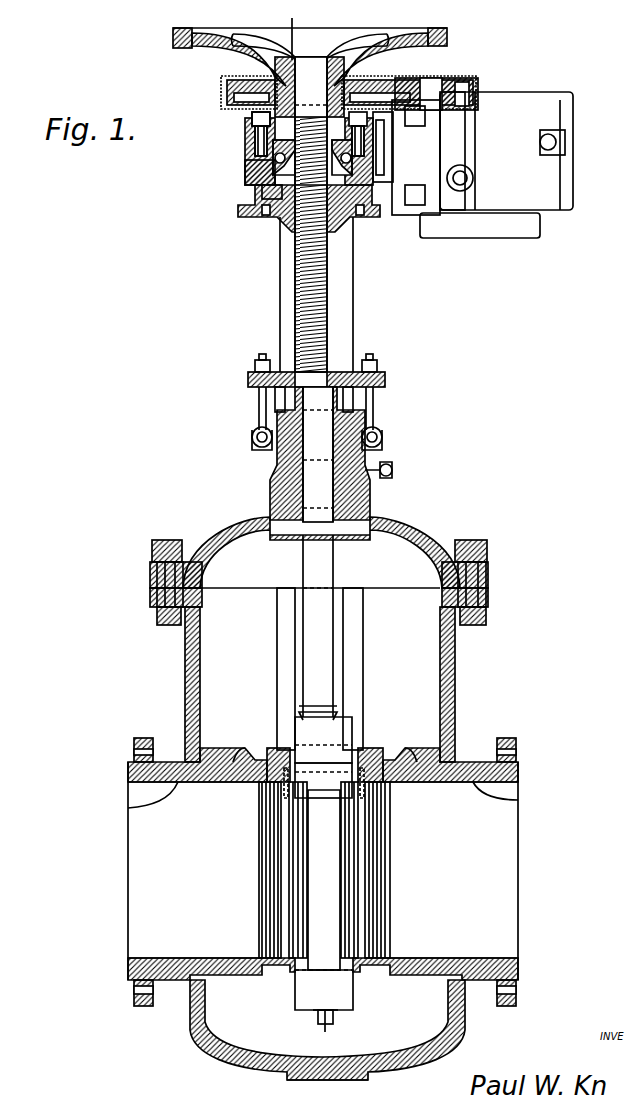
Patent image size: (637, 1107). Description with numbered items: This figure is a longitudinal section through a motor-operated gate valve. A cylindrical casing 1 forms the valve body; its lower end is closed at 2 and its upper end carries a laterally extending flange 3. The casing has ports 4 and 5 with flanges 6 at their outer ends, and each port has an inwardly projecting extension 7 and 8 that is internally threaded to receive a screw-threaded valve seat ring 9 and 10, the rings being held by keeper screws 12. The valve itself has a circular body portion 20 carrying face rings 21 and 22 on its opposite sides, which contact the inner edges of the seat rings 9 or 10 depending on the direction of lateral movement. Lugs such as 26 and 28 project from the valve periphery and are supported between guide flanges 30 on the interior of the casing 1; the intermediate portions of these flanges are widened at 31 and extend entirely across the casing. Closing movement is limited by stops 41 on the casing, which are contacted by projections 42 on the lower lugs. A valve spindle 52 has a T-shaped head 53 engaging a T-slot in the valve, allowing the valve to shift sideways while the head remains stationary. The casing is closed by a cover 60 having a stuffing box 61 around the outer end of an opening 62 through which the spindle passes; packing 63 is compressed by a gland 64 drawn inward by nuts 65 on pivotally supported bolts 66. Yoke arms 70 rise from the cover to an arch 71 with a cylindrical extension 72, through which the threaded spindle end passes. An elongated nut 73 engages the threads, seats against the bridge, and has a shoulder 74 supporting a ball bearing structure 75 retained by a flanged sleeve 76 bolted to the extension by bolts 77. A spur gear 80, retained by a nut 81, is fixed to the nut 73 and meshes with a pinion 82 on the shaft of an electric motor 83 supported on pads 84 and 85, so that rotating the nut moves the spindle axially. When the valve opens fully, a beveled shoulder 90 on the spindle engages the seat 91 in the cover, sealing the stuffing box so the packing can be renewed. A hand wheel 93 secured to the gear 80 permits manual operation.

The cylindrical casing 1 is at (456, 690).
The closed lower end 2 is at (254, 1070).
The laterally extending flange 3 is at (486, 600).
The port 4 is at (490, 792).
The port 5 is at (170, 792).
The flanges 6 is at (142, 738).
The inwardly projecting extension 7 is at (402, 768).
The inwardly projecting extension 8 is at (238, 758).
The valve seat ring 9 is at (367, 868).
The valve seat ring 10 is at (281, 868).
The keeper screws 12 is at (270, 768).
The body portion of valve 20 is at (324, 884).
The face ring 21 is at (300, 924).
The face ring 22 is at (356, 930).
The lug 26 is at (323, 780).
The lug 28 is at (324, 990).
The guide flanges 30 is at (282, 645).
The widened intermediate portions of guide flanges 31 is at (272, 748).
The stops 41 is at (333, 1027).
The projections 42 is at (318, 1020).
The valve spindle 52 is at (318, 571).
The T-shaped head 53 is at (323, 740).
The cover 60 is at (420, 540).
The stuffing box 61 is at (282, 478).
The opening 62 is at (338, 548).
The packing 63 is at (356, 412).
The gland 64 is at (352, 395).
The nuts 65 is at (254, 366).
The pivotally supported bolts 66 is at (254, 400).
The yoke arms 70 is at (343, 327).
The arch 71 is at (258, 212).
The cylindrical extension 72 is at (258, 182).
The elongated nut 73 is at (256, 147).
The shoulder 74 is at (264, 192).
The ball bearing structure 75 is at (248, 172).
The flanged sleeve 76 is at (320, 120).
The bolts 77 is at (250, 130).
The spur gear 80 is at (228, 90).
The nut 81 is at (282, 30).
The pinion 82 is at (460, 78).
The electric motor 83 is at (482, 153).
The pad 84 is at (382, 206).
The pad 85 is at (386, 120).
The beveled shoulder 90 is at (335, 712).
The valve seat 91 is at (305, 540).
The hand wheel 93 is at (338, 38).